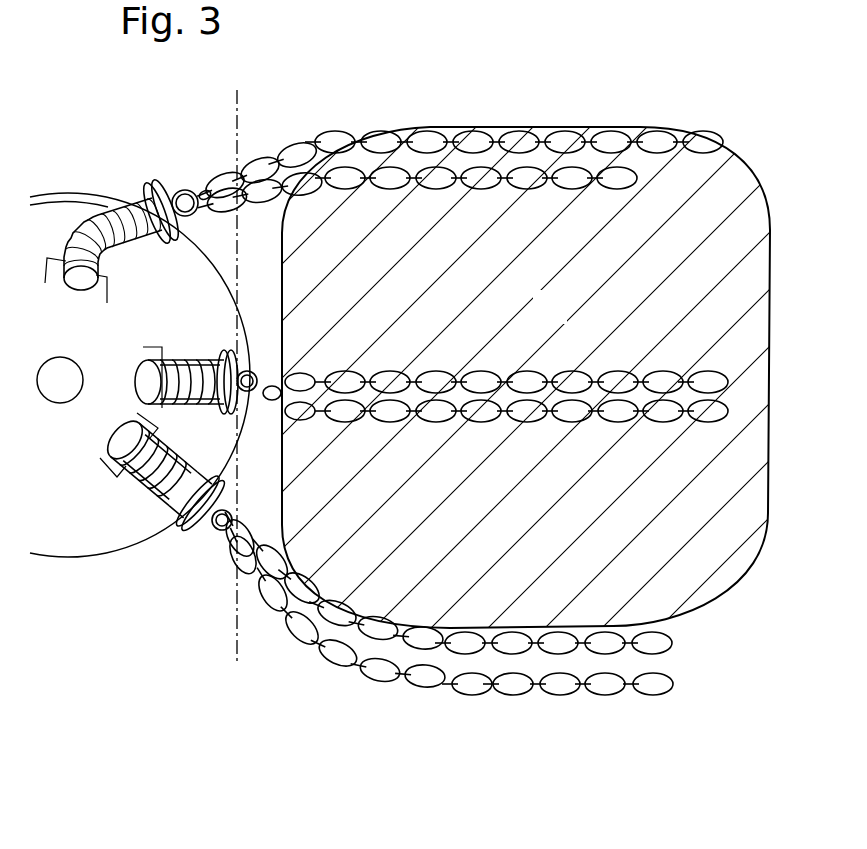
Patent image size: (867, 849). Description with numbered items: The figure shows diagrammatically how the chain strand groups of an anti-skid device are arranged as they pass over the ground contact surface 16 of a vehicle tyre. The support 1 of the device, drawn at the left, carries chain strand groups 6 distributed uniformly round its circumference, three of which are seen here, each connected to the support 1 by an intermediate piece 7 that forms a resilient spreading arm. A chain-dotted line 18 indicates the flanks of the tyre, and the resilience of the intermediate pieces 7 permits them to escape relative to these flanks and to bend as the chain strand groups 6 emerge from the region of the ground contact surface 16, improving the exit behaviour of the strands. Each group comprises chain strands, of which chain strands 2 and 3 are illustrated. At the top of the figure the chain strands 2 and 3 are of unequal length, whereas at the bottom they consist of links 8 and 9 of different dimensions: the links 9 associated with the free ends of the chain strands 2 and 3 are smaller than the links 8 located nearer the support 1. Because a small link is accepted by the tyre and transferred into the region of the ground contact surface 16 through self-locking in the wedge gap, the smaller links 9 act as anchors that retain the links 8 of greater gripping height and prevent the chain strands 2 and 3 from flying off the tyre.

The support 1 is at (113, 553).
The chain strand 2 is at (572, 125).
The chain strand 3 is at (586, 163).
The chain strand group 6 is at (335, 128).
The intermediate piece 7 is at (125, 195).
The link 8 is at (432, 688).
The link 9 is at (602, 697).
The ground contact surface 16 is at (538, 320).
The chain-dotted line 18 is at (238, 642).